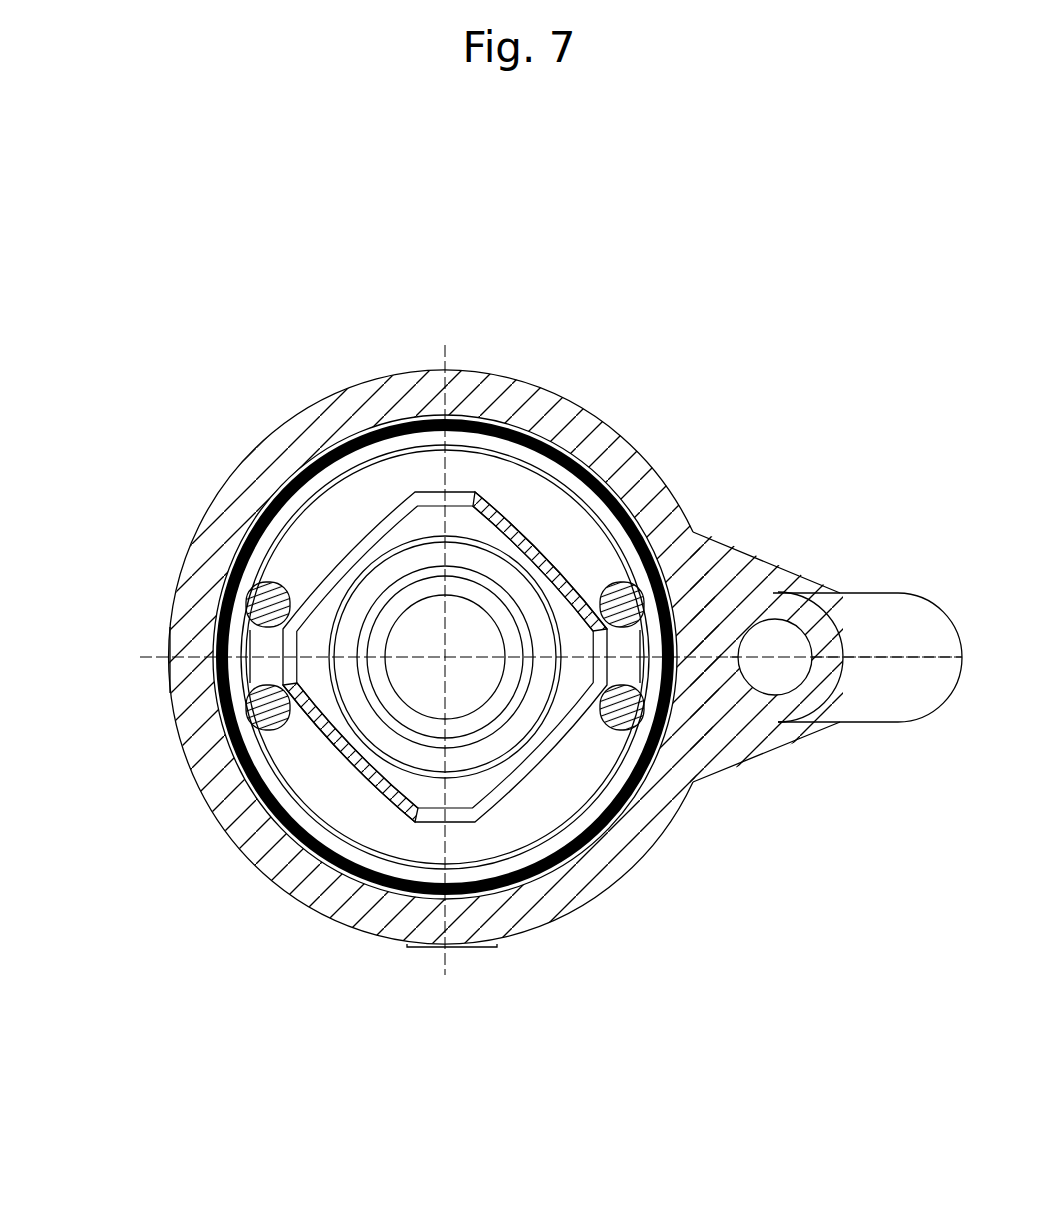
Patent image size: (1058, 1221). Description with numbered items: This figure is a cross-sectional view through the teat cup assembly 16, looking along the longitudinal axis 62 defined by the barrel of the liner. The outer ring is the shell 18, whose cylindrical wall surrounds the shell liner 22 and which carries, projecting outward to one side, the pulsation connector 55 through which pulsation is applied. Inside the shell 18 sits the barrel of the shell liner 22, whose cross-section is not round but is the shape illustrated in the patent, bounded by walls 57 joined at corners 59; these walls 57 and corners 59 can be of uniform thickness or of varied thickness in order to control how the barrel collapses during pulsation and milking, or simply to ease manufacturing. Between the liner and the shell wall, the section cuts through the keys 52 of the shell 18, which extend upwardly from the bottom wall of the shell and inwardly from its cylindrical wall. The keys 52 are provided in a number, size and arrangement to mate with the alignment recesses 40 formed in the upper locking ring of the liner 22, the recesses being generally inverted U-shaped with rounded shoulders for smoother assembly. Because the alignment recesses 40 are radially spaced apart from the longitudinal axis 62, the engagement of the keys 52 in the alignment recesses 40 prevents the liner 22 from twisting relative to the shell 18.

The teat cup assembly 16 is at (619, 262).
The shell 18 is at (587, 435).
The shell liner 22 is at (360, 518).
The alignment recesses 40 is at (247, 577).
The keys 52 is at (213, 624).
The pulsation connector 55 is at (785, 585).
The walls 57 is at (350, 560).
The corners 59 is at (468, 490).
The longitudinal axis 62 is at (640, 548).